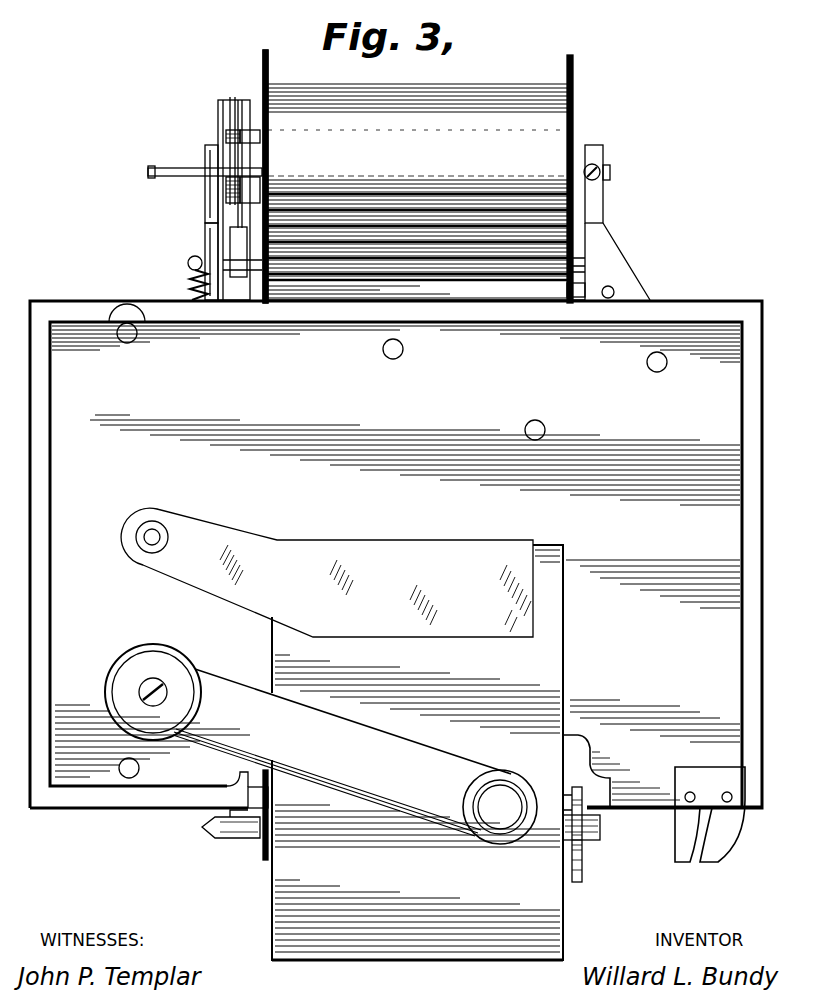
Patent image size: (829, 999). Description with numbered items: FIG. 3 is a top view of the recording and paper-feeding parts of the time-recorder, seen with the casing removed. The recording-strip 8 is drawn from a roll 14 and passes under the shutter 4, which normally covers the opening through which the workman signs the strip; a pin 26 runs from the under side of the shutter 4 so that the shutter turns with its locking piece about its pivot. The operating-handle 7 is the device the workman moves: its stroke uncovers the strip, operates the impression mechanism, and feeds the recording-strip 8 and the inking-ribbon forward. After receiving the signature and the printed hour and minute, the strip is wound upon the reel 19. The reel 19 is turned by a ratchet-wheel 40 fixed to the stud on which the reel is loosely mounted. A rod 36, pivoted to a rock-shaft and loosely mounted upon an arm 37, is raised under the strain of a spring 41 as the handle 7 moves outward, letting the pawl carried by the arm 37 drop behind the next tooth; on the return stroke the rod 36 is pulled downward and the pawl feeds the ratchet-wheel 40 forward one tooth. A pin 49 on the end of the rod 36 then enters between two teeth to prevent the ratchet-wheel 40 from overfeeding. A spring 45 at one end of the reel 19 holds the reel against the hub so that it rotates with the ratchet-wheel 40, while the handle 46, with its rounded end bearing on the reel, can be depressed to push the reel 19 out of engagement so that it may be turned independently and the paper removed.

The shutter 4 is at (327, 572).
The operating-handle 7 is at (321, 744).
The recording-strip 8 is at (272, 652).
The roll 14 is at (360, 968).
The reel 19 is at (424, 176).
The pin 26 is at (150, 539).
The rod 36 is at (221, 124).
The arm 37 is at (268, 62).
The ratchet-wheel 40 is at (240, 104).
The spring 41 is at (190, 286).
The spring 45 is at (587, 160).
The handle 46 is at (178, 168).
The pin 49 is at (232, 97).